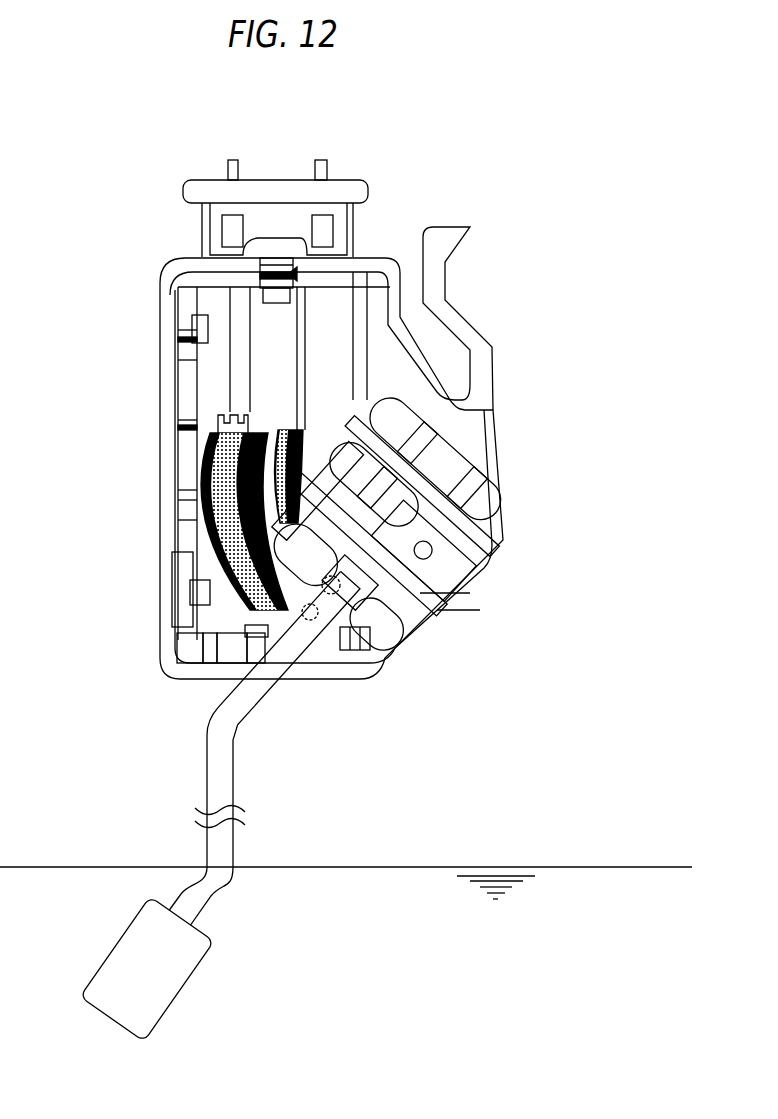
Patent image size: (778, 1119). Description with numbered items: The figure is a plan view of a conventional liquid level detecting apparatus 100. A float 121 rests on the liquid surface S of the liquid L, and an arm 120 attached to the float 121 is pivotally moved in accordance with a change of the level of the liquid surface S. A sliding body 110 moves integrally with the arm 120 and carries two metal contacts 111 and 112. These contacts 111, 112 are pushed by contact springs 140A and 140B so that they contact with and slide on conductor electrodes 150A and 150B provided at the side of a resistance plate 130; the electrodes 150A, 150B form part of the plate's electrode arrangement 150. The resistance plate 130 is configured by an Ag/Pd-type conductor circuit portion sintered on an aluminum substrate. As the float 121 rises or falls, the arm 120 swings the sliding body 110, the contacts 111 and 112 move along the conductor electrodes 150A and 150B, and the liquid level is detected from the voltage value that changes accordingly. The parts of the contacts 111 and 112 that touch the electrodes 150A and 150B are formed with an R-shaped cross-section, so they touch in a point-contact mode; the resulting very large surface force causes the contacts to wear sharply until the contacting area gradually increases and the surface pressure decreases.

The liquid level detecting apparatus 100 is at (442, 160).
The sliding body 110 is at (486, 456).
The contact 111 is at (308, 621).
The contact 112 is at (333, 596).
The arm 120 is at (212, 770).
The float 121 is at (140, 933).
The resistance plate 130 is at (200, 280).
The contact spring 140A is at (345, 625).
The contact spring 140B is at (363, 602).
The stack 150 is at (196, 540).
The conductor electrode 150A is at (232, 414).
The conductor electrode 150B is at (285, 432).
The liquid surface S is at (631, 860).
The liquid L is at (605, 935).